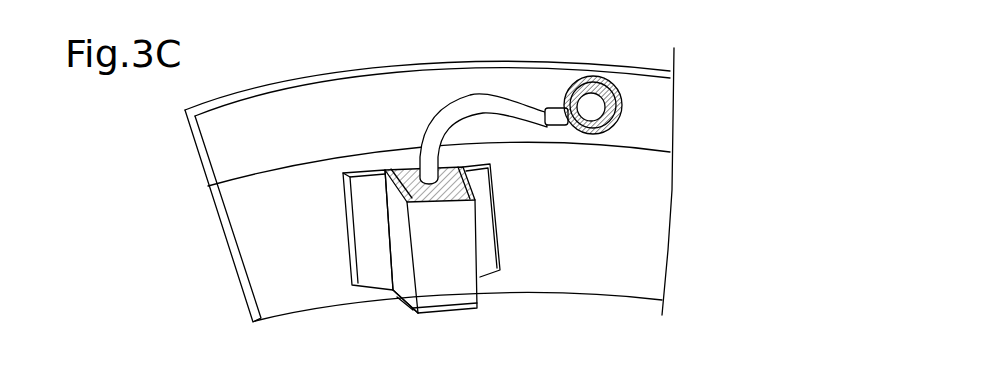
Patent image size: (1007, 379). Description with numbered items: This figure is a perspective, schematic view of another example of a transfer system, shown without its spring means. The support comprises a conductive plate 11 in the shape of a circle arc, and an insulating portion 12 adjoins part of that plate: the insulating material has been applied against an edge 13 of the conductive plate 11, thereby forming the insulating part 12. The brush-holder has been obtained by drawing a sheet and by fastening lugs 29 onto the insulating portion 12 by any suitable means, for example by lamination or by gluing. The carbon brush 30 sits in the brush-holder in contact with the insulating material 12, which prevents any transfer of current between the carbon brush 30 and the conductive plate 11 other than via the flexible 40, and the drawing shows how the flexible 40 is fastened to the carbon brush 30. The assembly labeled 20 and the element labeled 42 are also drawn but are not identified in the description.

The conductive plate 11 is at (259, 125).
The insulating portion 12 is at (268, 276).
The edge 13 is at (212, 205).
The sensor assembly 20 is at (520, 192).
The lugs 29 is at (487, 237).
The carbon brush 30 is at (397, 296).
The flexible 40 is at (497, 107).
The connector 42 is at (597, 80).